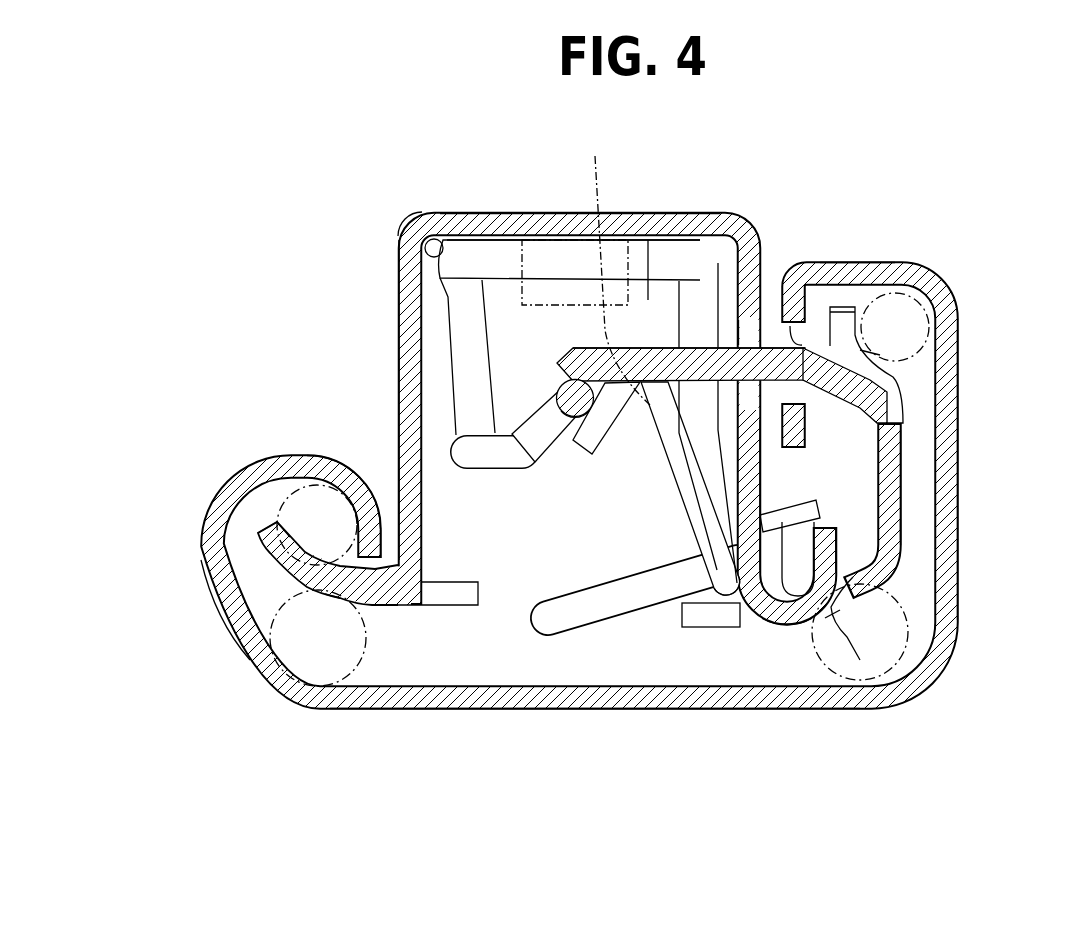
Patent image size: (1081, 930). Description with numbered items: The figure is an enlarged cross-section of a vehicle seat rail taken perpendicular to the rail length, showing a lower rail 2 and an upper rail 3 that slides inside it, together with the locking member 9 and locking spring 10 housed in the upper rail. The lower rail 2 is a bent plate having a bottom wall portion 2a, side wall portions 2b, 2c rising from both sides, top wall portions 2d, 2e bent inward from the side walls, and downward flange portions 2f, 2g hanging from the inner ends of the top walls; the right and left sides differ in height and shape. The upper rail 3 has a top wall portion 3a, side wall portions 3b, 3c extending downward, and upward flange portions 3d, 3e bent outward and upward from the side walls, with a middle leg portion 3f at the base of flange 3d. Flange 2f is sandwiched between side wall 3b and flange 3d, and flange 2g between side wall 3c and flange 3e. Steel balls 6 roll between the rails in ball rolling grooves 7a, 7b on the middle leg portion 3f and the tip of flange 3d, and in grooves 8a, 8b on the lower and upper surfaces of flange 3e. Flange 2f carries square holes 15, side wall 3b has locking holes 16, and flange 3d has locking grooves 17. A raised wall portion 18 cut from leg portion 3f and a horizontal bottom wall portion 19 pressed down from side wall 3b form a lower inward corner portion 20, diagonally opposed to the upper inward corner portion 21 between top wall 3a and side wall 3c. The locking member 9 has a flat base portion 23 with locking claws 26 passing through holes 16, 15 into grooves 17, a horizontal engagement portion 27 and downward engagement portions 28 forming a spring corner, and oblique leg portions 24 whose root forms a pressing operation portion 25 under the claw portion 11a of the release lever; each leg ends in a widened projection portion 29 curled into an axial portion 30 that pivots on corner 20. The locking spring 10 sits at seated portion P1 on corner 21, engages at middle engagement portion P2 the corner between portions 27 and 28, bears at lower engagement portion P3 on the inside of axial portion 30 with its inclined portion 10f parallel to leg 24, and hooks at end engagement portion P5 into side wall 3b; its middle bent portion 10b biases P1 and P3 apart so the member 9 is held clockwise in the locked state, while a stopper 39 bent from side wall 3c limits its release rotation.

The lower rail 2 is at (197, 575).
The bottom wall portion 2a is at (540, 711).
The side wall portion 2b is at (960, 460).
The side wall portion 2c is at (232, 628).
The top wall portion 2d is at (858, 263).
The top wall portion 2e is at (290, 455).
The downward flange portion 2f is at (905, 430).
The downward flange portion 2g is at (362, 550).
The upper rail 3 is at (395, 253).
The top wall portion 3a is at (622, 212).
The side wall portion 3b is at (763, 485).
The side wall portion 3c is at (398, 390).
The upward flange portion 3d is at (842, 540).
The upward flange portion 3e is at (262, 530).
The middle leg portion 3f is at (883, 590).
The steel ball 6 is at (903, 310).
The ball rolling groove 7a is at (835, 615).
The ball rolling groove 7b is at (870, 350).
The ball rolling groove 8a is at (338, 582).
The ball rolling groove 8b is at (282, 515).
The locking member 9 is at (697, 348).
The locking spring 10 is at (447, 298).
The middle bent portion 10b is at (565, 238).
The inclined portion 10f is at (720, 485).
The claw portion 11a is at (447, 240).
The square hole 15 is at (795, 330).
The locking hole 16 is at (760, 323).
The locking groove 17 is at (897, 380).
The raised wall portion 18 is at (838, 560).
The bottom wall portion 19 is at (680, 620).
The lower inward corner portion 20 is at (775, 590).
The upper inward corner portion 21 is at (440, 210).
The base portion 23 is at (648, 238).
The leg portion 24 is at (665, 487).
The pressing operation portion 25 is at (611, 266).
The locking claw 26 is at (880, 405).
The horizontal engagement portion 27 is at (555, 352).
The downward engagement portion 28 is at (588, 445).
The projection portion 29 is at (862, 578).
The axial portion 30 is at (797, 600).
The stopper 39 is at (460, 605).
The seated portion P1 is at (400, 250).
The middle engagement portion P2 is at (570, 418).
The lower engagement portion P3 is at (740, 597).
The end engagement portion P5 is at (865, 535).